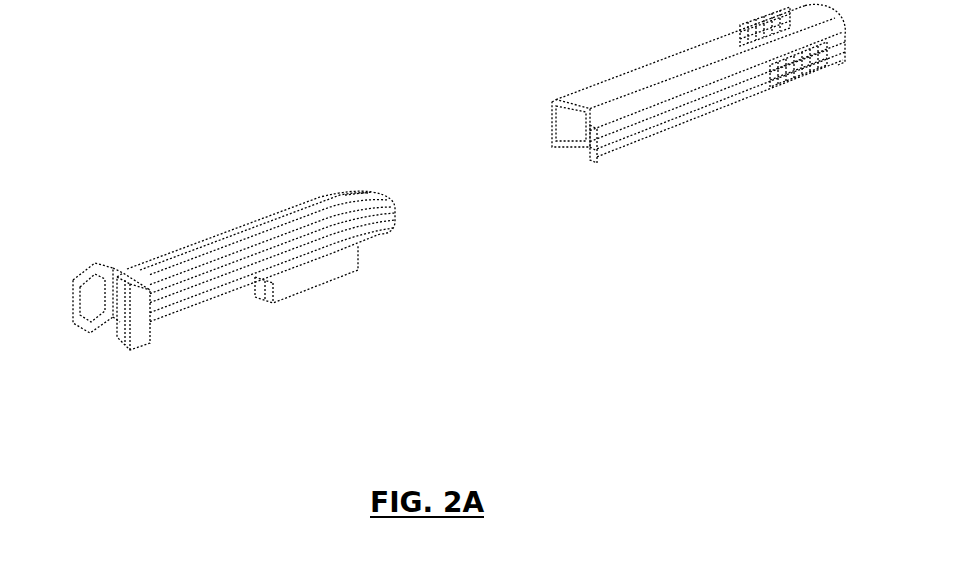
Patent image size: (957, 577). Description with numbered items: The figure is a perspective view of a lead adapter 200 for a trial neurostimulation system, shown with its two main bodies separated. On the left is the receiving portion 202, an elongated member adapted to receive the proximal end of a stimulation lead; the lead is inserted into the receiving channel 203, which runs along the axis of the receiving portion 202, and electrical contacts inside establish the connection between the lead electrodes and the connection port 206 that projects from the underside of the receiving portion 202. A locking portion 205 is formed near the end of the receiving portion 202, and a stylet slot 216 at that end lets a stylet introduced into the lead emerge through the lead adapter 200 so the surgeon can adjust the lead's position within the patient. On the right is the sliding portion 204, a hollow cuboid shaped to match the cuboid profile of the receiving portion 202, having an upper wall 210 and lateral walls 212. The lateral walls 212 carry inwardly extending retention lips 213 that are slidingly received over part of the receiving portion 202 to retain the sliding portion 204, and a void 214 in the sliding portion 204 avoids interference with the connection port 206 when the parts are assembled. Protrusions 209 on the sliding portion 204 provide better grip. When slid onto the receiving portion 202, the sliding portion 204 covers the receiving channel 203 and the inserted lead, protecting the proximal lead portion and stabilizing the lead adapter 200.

The lead adapter 200 is at (555, 281).
The receiving portion 202 is at (188, 280).
The receiving channel 203 is at (355, 193).
The sliding portion 204 is at (720, 122).
The locking portion 205 is at (157, 325).
The connection port 206 is at (318, 278).
The protrusions 209 is at (798, 75).
The upper wall 210 is at (600, 90).
The lateral walls 212 is at (555, 110).
The retention lips 213 is at (557, 143).
The void 214 is at (578, 152).
The stylet slot 216 is at (100, 292).